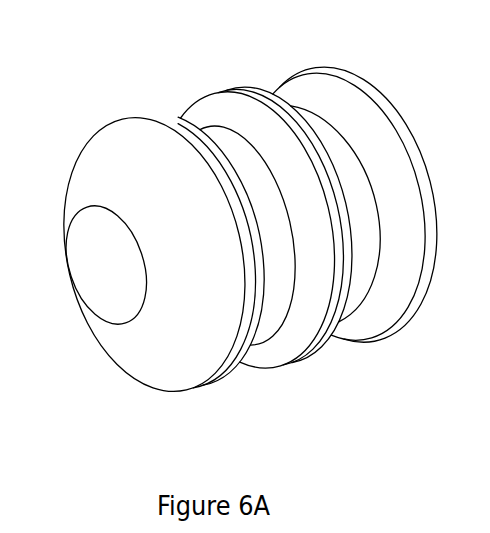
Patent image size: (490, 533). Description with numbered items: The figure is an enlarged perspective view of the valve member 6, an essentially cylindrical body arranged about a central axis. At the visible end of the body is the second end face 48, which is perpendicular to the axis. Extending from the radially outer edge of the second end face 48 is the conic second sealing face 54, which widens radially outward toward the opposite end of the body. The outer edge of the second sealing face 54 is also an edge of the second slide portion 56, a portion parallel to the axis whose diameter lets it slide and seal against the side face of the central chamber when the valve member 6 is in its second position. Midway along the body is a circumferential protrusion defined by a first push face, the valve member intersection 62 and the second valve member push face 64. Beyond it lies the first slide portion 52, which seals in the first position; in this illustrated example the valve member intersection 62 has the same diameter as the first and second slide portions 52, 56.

The valve member 6 is at (433, 103).
The second end face 48 is at (96, 284).
The first slide portion 52 is at (331, 71).
The second sealing face 54 is at (152, 347).
The second slide portion 56 is at (215, 378).
The valve member intersection 62 is at (305, 350).
The second valve member push face 64 is at (202, 113).